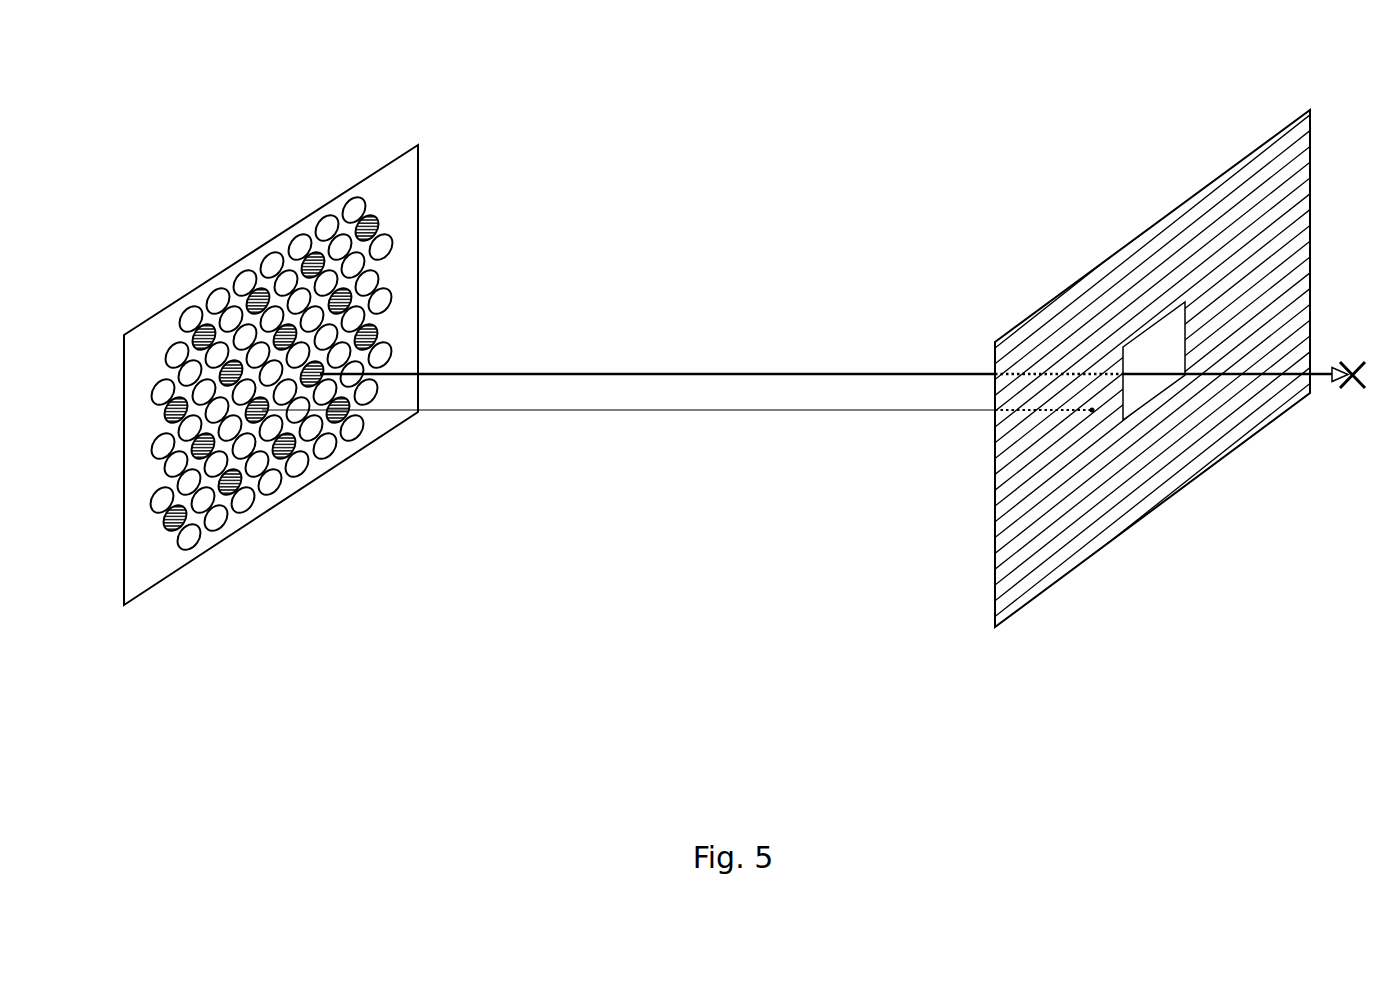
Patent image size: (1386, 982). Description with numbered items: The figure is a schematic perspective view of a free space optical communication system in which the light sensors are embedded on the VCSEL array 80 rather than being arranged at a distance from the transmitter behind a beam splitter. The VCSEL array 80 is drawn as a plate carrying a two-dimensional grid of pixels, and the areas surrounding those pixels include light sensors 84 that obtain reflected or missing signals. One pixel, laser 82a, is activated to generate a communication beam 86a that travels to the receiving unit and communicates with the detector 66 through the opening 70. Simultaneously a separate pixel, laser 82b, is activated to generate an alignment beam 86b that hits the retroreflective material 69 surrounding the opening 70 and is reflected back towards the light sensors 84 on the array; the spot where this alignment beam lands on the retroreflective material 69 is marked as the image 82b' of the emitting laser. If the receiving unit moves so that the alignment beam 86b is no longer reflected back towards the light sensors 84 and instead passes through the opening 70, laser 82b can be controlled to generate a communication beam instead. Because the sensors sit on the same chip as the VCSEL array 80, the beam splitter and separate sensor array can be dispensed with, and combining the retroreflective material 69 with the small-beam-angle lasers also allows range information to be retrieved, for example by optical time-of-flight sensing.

The VCSEL array 80 is at (418, 145).
The laser 82a is at (320, 370).
The laser 82b is at (209, 329).
The image of second aperture 82b' is at (1061, 326).
The light sensors 84 is at (387, 292).
The communication beam 86a is at (698, 373).
The alignment beam 86b is at (732, 413).
The retroreflective material 69 is at (1250, 254).
The opening 70 is at (1160, 353).
The detector 66 is at (1365, 388).